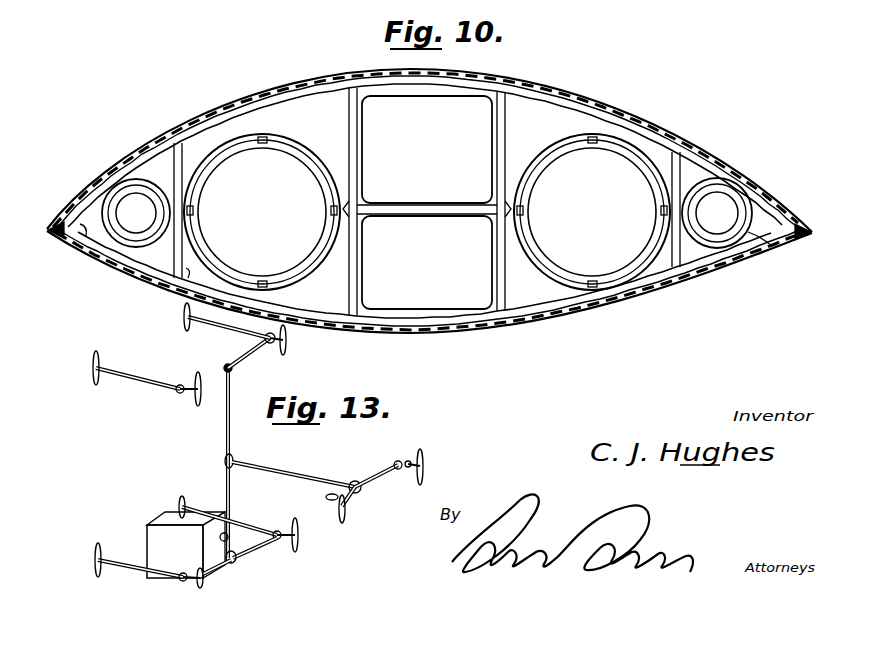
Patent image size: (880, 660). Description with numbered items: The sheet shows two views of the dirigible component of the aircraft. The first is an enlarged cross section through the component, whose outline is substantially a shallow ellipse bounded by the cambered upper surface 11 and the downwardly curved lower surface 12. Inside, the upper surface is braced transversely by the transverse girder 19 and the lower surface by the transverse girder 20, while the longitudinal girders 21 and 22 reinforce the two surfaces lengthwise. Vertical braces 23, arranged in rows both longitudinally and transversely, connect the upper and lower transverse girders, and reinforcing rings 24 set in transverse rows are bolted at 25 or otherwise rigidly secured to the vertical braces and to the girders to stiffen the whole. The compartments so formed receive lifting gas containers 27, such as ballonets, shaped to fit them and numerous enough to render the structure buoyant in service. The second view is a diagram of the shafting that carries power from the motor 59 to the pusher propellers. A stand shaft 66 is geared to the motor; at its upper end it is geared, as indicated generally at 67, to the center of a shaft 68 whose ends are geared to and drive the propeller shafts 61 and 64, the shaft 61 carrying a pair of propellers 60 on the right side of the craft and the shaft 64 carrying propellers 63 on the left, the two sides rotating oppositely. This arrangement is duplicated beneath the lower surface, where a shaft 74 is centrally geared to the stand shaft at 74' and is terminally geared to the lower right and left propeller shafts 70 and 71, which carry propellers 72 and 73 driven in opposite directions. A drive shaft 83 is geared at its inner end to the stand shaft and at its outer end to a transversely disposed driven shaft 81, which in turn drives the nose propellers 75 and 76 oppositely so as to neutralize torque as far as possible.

In FIG. 10, the cambered upper surface 11 is at (364, 75).
In FIG. 10, the downwardly curved lower surface 12 is at (628, 304).
In FIG. 10, the transverse girder 19 is at (580, 104).
In FIG. 10, the transverse girder 20 is at (530, 322).
In FIG. 10, the longitudinal girder 21 is at (326, 95).
In FIG. 10, the longitudinal girder 22 is at (142, 270).
In FIG. 10, the vertical brace 23 is at (344, 142).
In FIG. 10, the reinforcing ring 24 is at (212, 152).
In FIG. 10, the bolt 25 is at (128, 182).
In FIG. 10, the lifting gas container 27 is at (312, 178).
In FIG. 13, the motor 59 is at (162, 522).
In FIG. 13, the propeller 60 is at (192, 392).
In FIG. 13, the shaft 61 is at (148, 376).
In FIG. 13, the propeller 63 is at (190, 332).
In FIG. 13, the shaft 64 is at (228, 328).
In FIG. 13, the stand shaft 66 is at (234, 410).
In FIG. 13, the gearing 67 is at (222, 368).
In FIG. 13, the shaft 68 is at (274, 346).
In FIG. 13, the propeller shaft 70 is at (122, 576).
In FIG. 13, the propeller shaft 71 is at (252, 526).
In FIG. 13, the propeller 72 is at (94, 554).
In FIG. 13, the propeller 73 is at (185, 498).
In FIG. 13, the shaft 74 is at (277, 561).
In FIG. 13, the gearing 74' is at (240, 570).
In FIG. 13, the nose propeller 75 is at (346, 522).
In FIG. 13, the nose propeller 76 is at (430, 472).
In FIG. 13, the driven shaft 81 is at (376, 480).
In FIG. 13, the drive shaft 83 is at (304, 478).